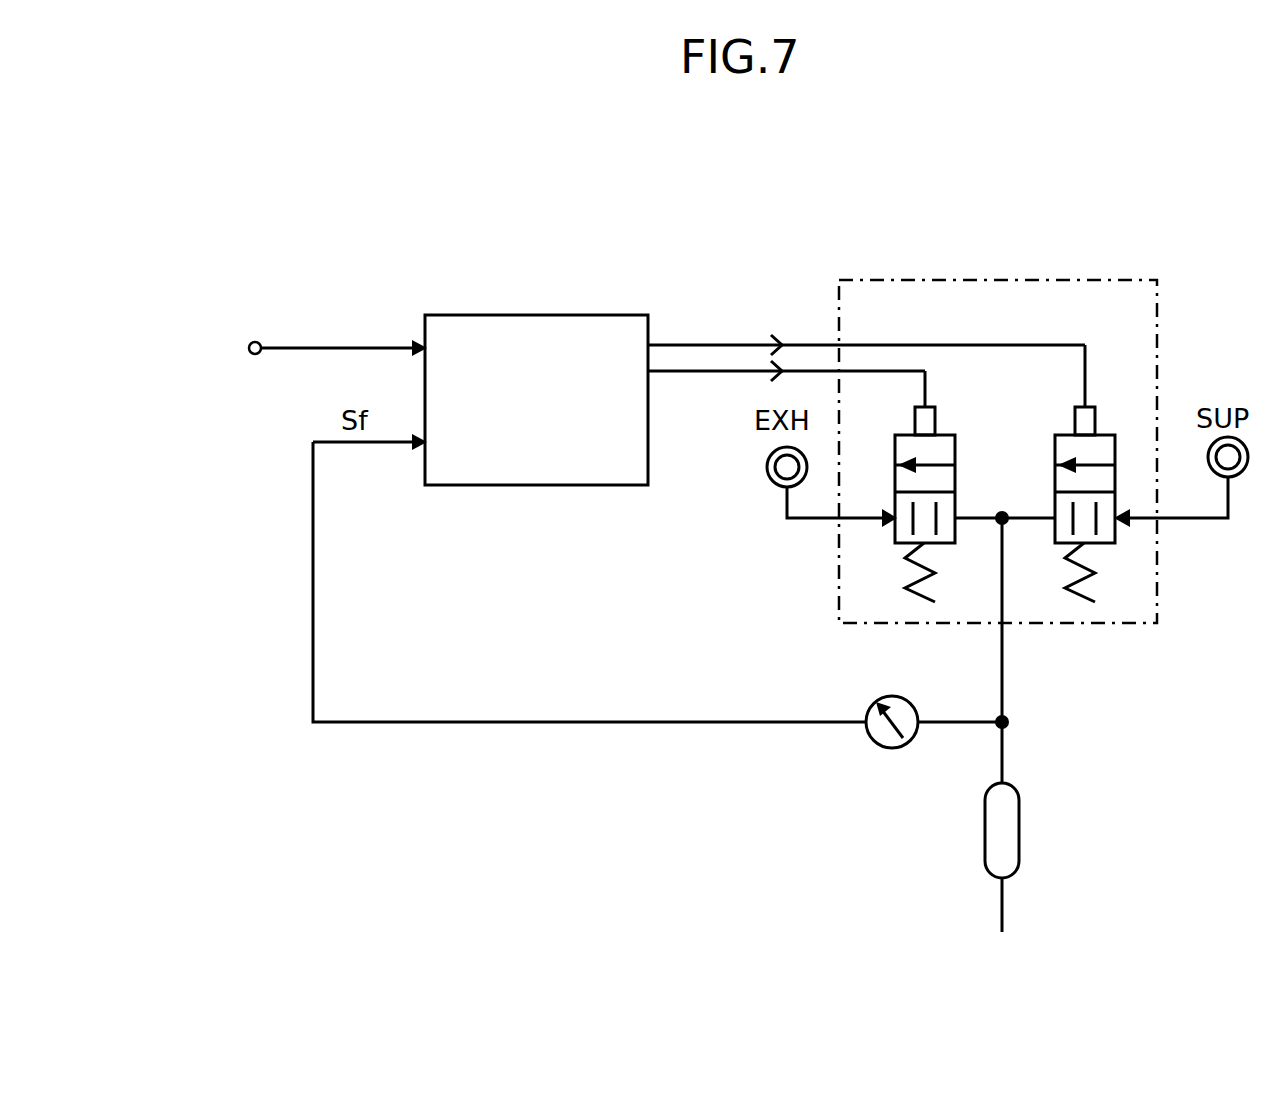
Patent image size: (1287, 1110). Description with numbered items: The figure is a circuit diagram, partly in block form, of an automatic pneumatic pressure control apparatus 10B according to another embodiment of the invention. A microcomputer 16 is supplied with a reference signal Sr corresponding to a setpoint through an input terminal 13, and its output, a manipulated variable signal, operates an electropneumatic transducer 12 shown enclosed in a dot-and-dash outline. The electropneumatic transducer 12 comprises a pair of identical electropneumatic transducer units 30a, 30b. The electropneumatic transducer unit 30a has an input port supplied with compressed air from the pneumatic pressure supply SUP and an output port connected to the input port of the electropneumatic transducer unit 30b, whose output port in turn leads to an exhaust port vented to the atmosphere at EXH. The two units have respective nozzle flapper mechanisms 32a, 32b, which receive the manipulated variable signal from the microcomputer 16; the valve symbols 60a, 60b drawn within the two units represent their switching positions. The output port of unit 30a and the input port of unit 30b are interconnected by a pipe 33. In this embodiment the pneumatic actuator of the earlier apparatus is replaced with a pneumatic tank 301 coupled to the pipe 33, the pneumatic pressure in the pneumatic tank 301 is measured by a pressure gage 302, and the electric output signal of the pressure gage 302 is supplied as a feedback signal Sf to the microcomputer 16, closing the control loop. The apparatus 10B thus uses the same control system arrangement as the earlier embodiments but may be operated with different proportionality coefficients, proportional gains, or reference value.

The automatic pneumatic pressure control apparatus 10B is at (771, 202).
The electropneumatic transducer 12 is at (1082, 280).
The input terminal 13 is at (250, 355).
The microcomputer 16 is at (568, 315).
The electropneumatic transducer unit 30a is at (1122, 537).
The electropneumatic transducer unit 30b is at (893, 543).
The nozzle flapper mechanism 32a is at (1092, 410).
The nozzle flapper mechanism 32b is at (935, 408).
The pipe 33 is at (1006, 605).
The valve position of supply valve 60a is at (1049, 468).
The valve position of exhaust valve 60b is at (958, 510).
The pneumatic tank 301 is at (1019, 830).
The pressure gage 302 is at (914, 740).